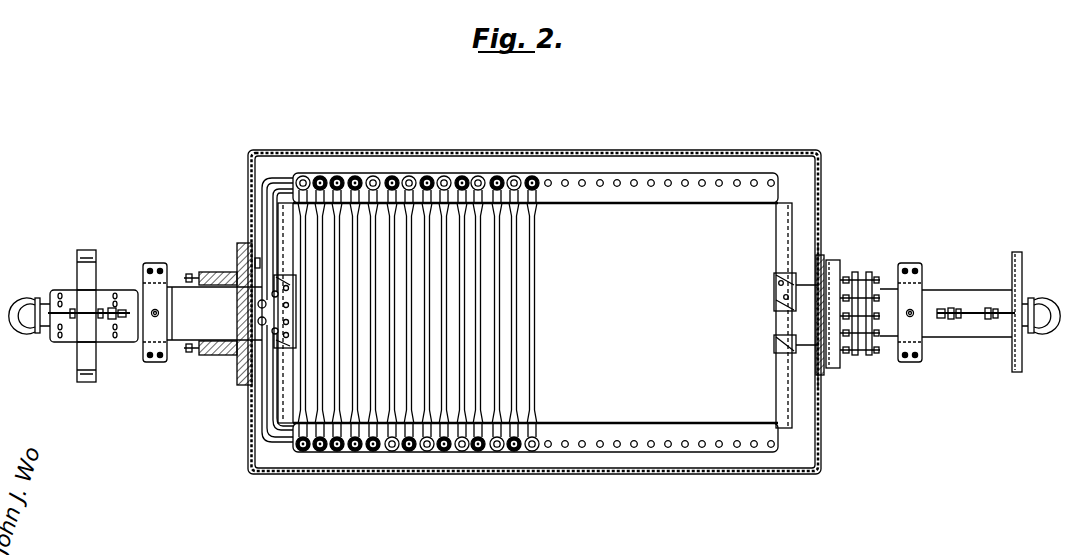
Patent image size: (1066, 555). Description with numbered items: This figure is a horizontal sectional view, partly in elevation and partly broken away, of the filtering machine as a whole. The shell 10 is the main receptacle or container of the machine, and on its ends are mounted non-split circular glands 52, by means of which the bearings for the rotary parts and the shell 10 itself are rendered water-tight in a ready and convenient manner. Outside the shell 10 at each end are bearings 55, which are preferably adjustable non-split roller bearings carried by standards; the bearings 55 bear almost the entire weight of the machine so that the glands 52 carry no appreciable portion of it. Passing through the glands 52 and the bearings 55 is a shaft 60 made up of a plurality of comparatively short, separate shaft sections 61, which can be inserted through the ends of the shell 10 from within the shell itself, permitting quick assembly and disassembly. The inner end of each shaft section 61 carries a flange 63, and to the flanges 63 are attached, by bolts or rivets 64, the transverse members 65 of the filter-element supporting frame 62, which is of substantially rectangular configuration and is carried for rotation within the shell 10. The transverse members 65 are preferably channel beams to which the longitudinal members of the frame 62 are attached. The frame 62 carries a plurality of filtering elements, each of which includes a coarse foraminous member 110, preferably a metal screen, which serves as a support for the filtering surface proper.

The shell 10 is at (419, 472).
The non-split circular gland 52 is at (233, 362).
The bearing 55 is at (150, 347).
The shaft 60 is at (186, 338).
The shaft section 61 is at (181, 291).
The filter-element supporting frame 62 is at (268, 206).
The flange 63 is at (260, 312).
The bolts or rivets 64 is at (289, 322).
The transverse member 65 is at (284, 387).
The foraminous member 110 is at (528, 312).